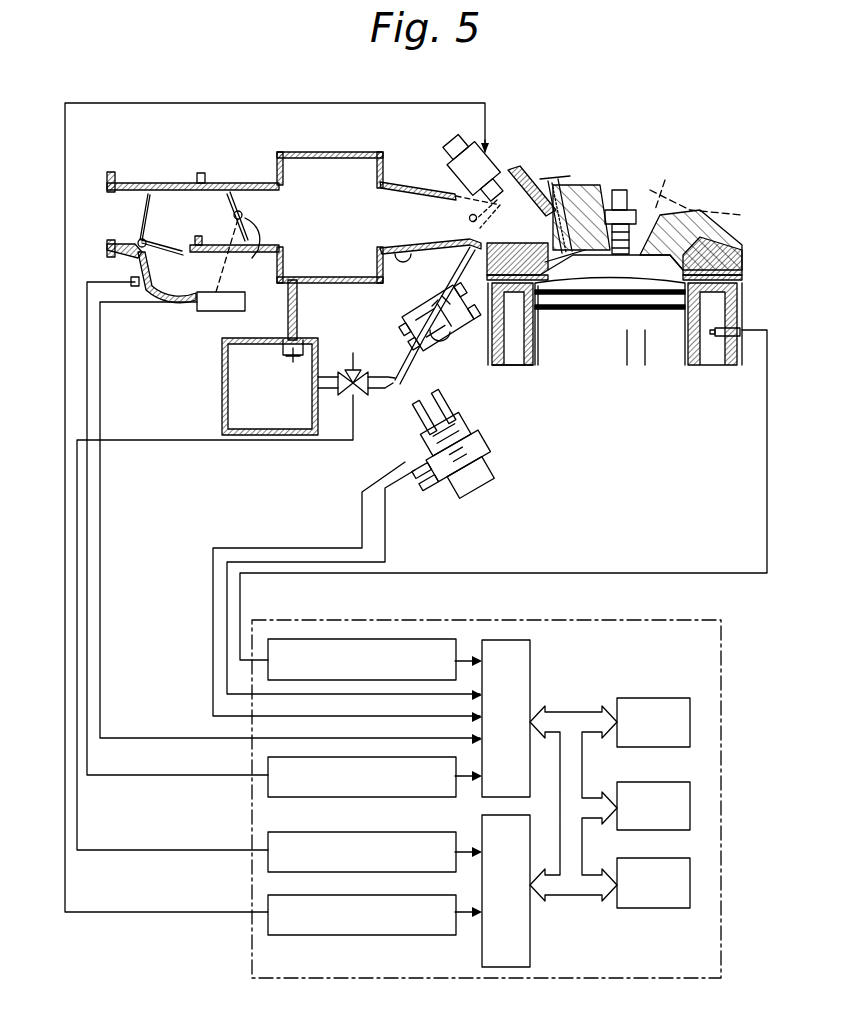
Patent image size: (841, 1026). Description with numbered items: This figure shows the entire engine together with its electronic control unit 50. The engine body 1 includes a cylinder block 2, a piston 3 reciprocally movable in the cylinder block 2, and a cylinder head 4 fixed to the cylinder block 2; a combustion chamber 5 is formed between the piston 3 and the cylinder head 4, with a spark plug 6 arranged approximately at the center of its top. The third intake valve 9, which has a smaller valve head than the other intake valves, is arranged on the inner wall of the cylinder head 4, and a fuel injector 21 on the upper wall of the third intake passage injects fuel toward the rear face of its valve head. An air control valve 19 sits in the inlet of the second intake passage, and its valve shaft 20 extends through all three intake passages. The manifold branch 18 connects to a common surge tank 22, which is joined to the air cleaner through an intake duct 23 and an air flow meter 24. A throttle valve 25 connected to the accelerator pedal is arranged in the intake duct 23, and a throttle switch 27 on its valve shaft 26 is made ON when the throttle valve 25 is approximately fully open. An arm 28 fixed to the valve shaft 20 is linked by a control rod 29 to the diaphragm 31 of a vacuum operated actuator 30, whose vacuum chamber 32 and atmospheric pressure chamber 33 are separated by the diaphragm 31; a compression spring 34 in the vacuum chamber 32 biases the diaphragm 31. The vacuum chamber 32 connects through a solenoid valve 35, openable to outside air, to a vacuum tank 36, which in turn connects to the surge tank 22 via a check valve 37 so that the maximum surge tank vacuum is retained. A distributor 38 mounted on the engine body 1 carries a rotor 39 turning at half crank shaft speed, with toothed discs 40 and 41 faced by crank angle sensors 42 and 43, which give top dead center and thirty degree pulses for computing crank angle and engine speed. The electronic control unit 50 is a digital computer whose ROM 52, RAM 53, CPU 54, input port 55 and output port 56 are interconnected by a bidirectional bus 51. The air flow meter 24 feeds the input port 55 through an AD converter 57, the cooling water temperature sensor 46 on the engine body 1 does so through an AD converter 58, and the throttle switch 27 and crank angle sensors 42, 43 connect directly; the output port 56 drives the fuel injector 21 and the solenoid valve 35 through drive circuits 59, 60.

The engine body 1 is at (750, 278).
The cylinder block 2 is at (700, 365).
The piston 3 is at (610, 340).
The cylinder head 4 is at (705, 235).
The combustion chamber 5 is at (632, 300).
The spark plug 6 is at (625, 190).
The third intake valve 9 is at (552, 178).
The manifold branch 18 is at (398, 248).
The air control valve 19 is at (468, 200).
The valve shaft 20 is at (470, 215).
The fuel injector 21 is at (500, 150).
The surge tank 22 is at (318, 152).
The intake duct 23 is at (222, 188).
The air flow meter 24 is at (130, 183).
The throttle valve 25 is at (240, 200).
The valve shaft 26 is at (199, 260).
The throttle switch 27 is at (207, 311).
The arm 28 is at (465, 225).
The control rod 29 is at (505, 320).
The vacuum operated actuator 30 is at (452, 343).
The diaphragm 31 is at (520, 365).
The vacuum chamber 32 is at (400, 315).
The atmospheric pressure chamber 33 is at (405, 283).
The compression spring 34 is at (425, 337).
The solenoid valve 35 is at (355, 392).
The vacuum tank 36 is at (222, 395).
The check valve 37 is at (285, 355).
The distributor 38 is at (480, 418).
The rotor 39 is at (488, 455).
The disc 40 is at (462, 490).
The disc 41 is at (395, 450).
The crank angle sensor 42 is at (418, 485).
The crank angle sensor 43 is at (395, 478).
The cooling water temperature sensor 46 is at (752, 335).
The electronic control unit 50 is at (722, 680).
The bidirectional bus 51 is at (572, 885).
The ROM 52 is at (655, 698).
The RAM 53 is at (660, 782).
The CPU 54 is at (660, 858).
The input port 55 is at (532, 670).
The output port 56 is at (532, 950).
The AD converter 57 is at (352, 797).
The AD converter 58 is at (300, 639).
The drive circuit 59 is at (268, 900).
The drive circuit 60 is at (268, 840).